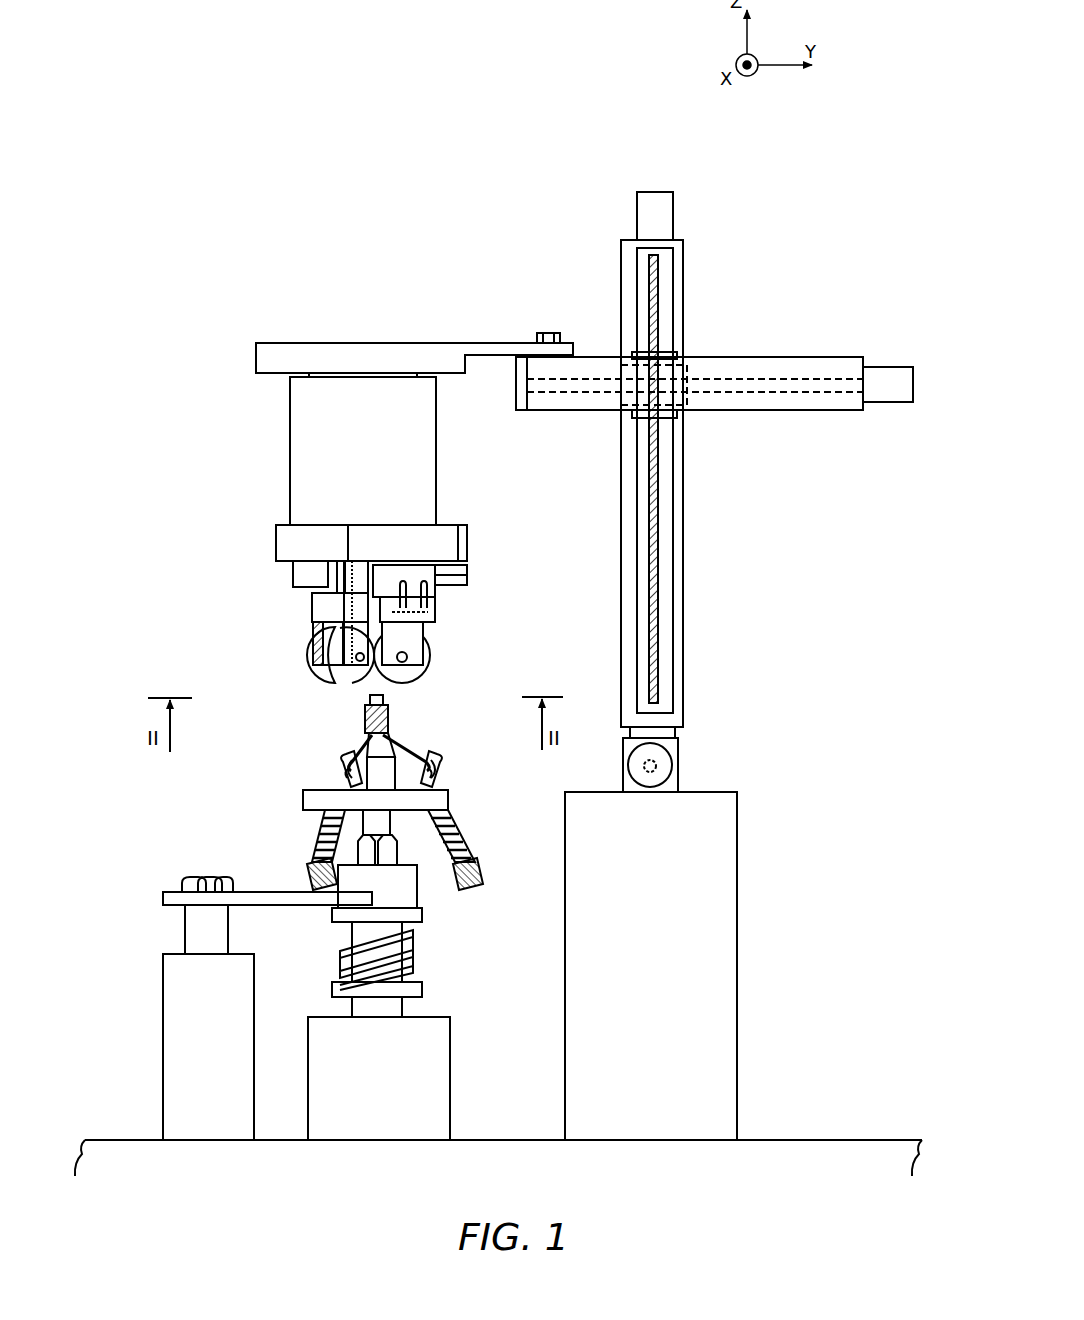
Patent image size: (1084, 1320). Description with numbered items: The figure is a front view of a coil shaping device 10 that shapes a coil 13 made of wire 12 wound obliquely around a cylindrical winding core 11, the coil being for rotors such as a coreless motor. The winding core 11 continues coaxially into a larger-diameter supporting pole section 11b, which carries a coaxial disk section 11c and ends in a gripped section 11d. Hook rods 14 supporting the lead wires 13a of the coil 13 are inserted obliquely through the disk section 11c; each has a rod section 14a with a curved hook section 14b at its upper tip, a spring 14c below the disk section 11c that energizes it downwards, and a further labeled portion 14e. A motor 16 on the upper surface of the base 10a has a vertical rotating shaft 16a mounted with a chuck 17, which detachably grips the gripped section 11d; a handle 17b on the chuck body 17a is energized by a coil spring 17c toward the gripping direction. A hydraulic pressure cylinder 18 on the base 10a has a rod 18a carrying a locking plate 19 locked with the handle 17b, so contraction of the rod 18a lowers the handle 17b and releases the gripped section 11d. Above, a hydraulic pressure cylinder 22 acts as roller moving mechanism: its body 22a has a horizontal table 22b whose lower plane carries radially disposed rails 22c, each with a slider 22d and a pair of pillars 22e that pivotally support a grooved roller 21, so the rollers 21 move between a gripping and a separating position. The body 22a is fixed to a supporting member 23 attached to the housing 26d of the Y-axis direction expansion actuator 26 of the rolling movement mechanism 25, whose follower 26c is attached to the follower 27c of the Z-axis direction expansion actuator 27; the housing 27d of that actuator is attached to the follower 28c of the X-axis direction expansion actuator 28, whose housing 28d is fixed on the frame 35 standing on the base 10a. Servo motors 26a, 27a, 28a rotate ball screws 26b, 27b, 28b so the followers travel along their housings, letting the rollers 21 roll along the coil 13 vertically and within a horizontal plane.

The coil shaping device 10 is at (538, 82).
The base 10a is at (855, 1140).
The winding core 11 is at (370, 699).
The supporting pole section 11b is at (362, 775).
The disk section 11c is at (303, 797).
The gripped section 11d is at (395, 825).
The wire 12 is at (365, 715).
The coil 13 is at (374, 736).
The lead wires 13a is at (357, 750).
The hook rod 14 is at (335, 810).
The rod section 14a is at (328, 835).
The hook section 14b is at (347, 765).
The spring 14c is at (325, 852).
The finger upper portion 14e is at (322, 815).
The motor 16 is at (450, 1062).
The rotating shaft 16a is at (402, 1005).
The chuck 17 is at (378, 916).
The chuck body 17a is at (357, 852).
The handle 17b is at (330, 919).
The coil spring 17c is at (416, 965).
The hydraulic pressure cylinder 18 is at (254, 1022).
The rod 18a is at (185, 932).
The locking plate 19 is at (260, 906).
The roller 21 is at (330, 680).
The hydraulic pressure cylinder 22 is at (348, 538).
The body 22a is at (290, 495).
The table 22b is at (470, 548).
The rail 22c is at (293, 575).
The slider 22d is at (312, 599).
The pillars 22e is at (313, 640).
The supporting member 23 is at (422, 342).
The rolling movement mechanism 25 is at (719, 478).
The Y-axis direction expansion actuator 26 is at (719, 357).
The servo motor 26a is at (893, 400).
The ball screw 26b is at (826, 398).
The follower 26c is at (688, 372).
The housing 26d is at (803, 357).
The Z-axis direction expansion actuator 27 is at (677, 446).
The servo motor 27a is at (674, 200).
The ball screw 27b is at (682, 260).
The follower 27c is at (676, 352).
The housing 27d is at (658, 262).
The X-axis direction expansion actuator 28 is at (702, 742).
The servo motor 28a is at (676, 758).
The ball screw 28b is at (656, 768).
The follower 28c is at (676, 733).
The housing 28d is at (672, 782).
The frame 35 is at (738, 935).